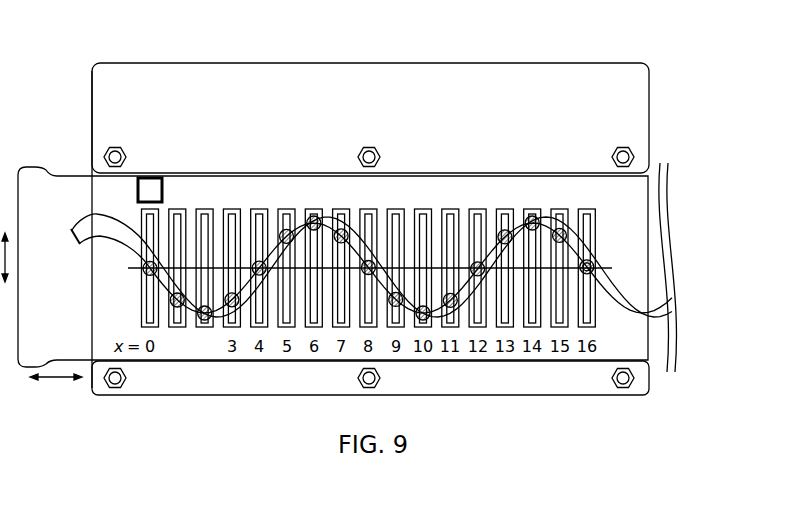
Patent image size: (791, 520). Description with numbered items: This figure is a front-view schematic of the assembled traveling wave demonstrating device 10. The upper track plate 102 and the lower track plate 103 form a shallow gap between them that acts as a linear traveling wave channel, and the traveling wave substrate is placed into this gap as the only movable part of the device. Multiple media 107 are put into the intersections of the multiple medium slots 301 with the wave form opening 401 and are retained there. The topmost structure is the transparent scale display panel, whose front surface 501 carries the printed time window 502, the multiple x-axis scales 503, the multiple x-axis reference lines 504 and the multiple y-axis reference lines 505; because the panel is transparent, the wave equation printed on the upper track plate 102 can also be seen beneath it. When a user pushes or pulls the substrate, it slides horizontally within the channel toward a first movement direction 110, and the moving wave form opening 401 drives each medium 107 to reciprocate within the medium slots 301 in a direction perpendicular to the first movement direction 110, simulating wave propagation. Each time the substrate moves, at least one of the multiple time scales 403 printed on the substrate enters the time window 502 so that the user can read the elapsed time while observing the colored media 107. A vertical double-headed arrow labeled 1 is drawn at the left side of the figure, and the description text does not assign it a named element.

The traveling wave demonstrating device 10 is at (488, 426).
The upper track plate 102 is at (370, 118).
The lower track plate 103 is at (370, 378).
The medium 107 is at (593, 261).
The first movement direction 110 is at (56, 390).
The vertical direction 1 is at (6, 270).
The medium slot 301 is at (553, 208).
The wave form opening 401 is at (74, 234).
The time scale 403 is at (315, 178).
The front surface 501 is at (369, 172).
The time window 502 is at (145, 178).
The x-axis scale 503 is at (205, 354).
The x-axis reference line 504 is at (148, 314).
The y-axis reference line 505 is at (133, 268).